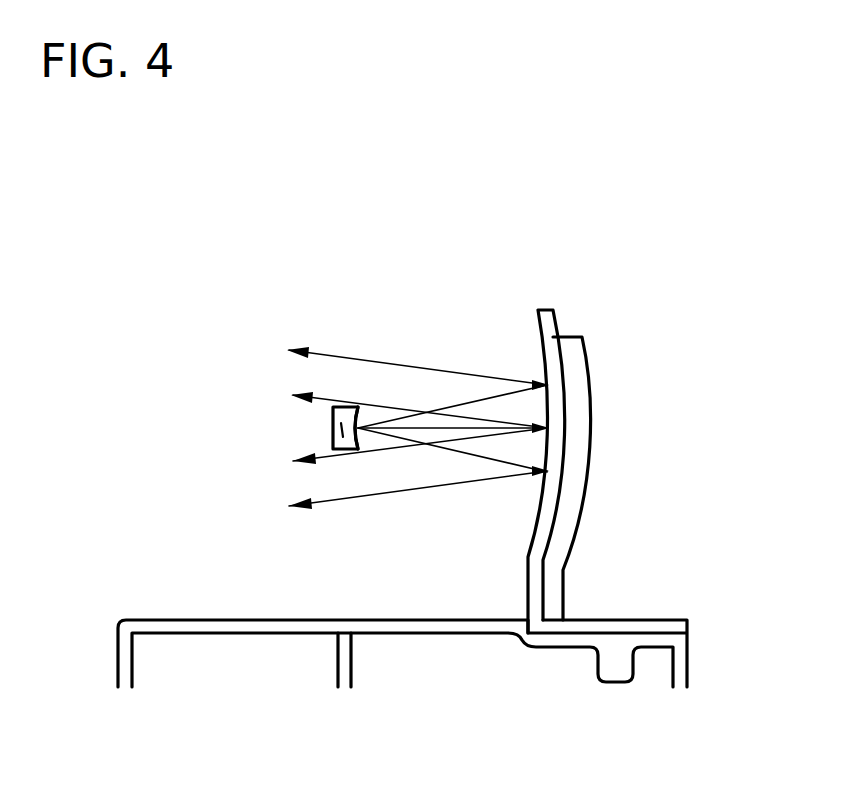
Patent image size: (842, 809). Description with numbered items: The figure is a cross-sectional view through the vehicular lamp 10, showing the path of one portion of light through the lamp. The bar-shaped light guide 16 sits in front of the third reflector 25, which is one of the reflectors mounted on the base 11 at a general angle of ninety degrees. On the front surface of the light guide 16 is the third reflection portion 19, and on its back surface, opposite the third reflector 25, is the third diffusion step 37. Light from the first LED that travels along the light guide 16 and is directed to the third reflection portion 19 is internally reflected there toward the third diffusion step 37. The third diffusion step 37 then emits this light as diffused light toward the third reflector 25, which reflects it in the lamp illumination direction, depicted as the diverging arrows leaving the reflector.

The vehicular lamp 10 is at (680, 258).
The base 11 is at (125, 660).
The light guide 16 is at (333, 425).
The third reflection portion 19 is at (333, 440).
The third reflector 25 is at (540, 308).
The third diffusion step 37 is at (360, 409).